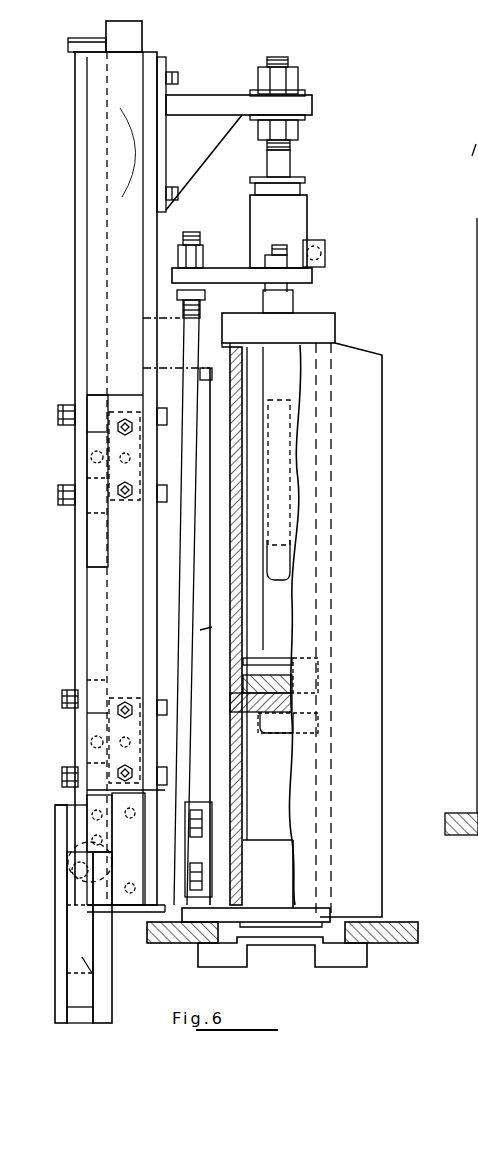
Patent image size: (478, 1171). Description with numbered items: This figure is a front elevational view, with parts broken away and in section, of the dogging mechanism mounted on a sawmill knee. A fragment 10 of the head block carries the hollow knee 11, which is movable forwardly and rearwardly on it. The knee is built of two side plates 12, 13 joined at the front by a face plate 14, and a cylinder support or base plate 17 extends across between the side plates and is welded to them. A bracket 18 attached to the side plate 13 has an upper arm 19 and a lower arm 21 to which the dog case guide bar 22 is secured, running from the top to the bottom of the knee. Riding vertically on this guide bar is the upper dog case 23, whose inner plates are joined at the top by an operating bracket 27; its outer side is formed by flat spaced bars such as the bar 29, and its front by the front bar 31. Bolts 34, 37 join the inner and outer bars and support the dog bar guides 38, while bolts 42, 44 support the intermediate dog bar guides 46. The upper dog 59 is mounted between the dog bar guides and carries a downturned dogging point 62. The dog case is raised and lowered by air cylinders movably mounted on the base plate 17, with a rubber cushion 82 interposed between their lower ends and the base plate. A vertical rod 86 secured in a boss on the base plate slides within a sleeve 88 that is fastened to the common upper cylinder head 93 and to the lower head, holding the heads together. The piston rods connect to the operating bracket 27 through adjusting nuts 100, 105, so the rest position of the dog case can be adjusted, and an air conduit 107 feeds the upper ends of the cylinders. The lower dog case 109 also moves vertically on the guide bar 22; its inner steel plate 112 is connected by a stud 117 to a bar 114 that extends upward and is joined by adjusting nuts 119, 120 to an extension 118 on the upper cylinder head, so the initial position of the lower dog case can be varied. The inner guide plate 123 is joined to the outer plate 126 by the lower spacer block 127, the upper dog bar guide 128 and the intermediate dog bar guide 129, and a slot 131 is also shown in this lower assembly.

The fragment of a head block 10 is at (419, 932).
The hollow knee 11 is at (345, 957).
The side plate 12 is at (336, 826).
The side plate 13 is at (244, 803).
The face plate 14 is at (370, 488).
The cylinder support or base plate 17 is at (255, 714).
The bracket 18 is at (204, 537).
The upper arm 19 is at (165, 318).
The lower arm 21 is at (245, 887).
The dog case guide bar 22 is at (142, 37).
The upper dog case 23 is at (72, 326).
The operating bracket 27 is at (210, 100).
The flat spaced bar 29 is at (75, 620).
The front bar 31 is at (95, 156).
The bolt 34 is at (62, 415).
The bolt 37 is at (62, 495).
The dog bar guide 38 is at (95, 412).
The bolt 42 is at (62, 699).
The bolt 44 is at (62, 777).
The intermediate dog bar guide 46 is at (100, 690).
The upper dog 59 is at (95, 500).
The dogging point 62 is at (100, 558).
The rubber cushion 82 is at (262, 673).
The vertically extending rod 86 is at (277, 568).
The sleeve 88 is at (283, 500).
The upper cylinder head 93 is at (308, 276).
The adjusting nut 100 is at (298, 85).
The adjusting nut 105 is at (300, 127).
The air conduit 107 is at (326, 252).
The lower dog case 109 is at (50, 847).
The steel plate 112 is at (160, 808).
The bar 114 is at (200, 630).
The stud 117 is at (228, 887).
The extension 118 is at (216, 268).
The adjusting nut 119 is at (174, 250).
The adjusting nut 120 is at (204, 296).
The inner guide plate 123 is at (105, 965).
The outer plate 126 is at (60, 973).
The lower spacer block 127 is at (80, 1017).
The upper dog bar guide 128 is at (72, 804).
The intermediate dog bar guide 129 is at (75, 912).
The slot 131 is at (92, 973).